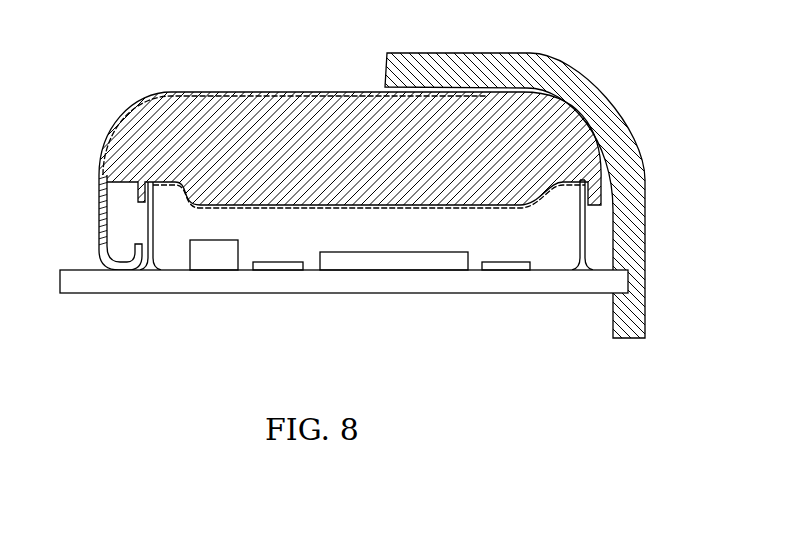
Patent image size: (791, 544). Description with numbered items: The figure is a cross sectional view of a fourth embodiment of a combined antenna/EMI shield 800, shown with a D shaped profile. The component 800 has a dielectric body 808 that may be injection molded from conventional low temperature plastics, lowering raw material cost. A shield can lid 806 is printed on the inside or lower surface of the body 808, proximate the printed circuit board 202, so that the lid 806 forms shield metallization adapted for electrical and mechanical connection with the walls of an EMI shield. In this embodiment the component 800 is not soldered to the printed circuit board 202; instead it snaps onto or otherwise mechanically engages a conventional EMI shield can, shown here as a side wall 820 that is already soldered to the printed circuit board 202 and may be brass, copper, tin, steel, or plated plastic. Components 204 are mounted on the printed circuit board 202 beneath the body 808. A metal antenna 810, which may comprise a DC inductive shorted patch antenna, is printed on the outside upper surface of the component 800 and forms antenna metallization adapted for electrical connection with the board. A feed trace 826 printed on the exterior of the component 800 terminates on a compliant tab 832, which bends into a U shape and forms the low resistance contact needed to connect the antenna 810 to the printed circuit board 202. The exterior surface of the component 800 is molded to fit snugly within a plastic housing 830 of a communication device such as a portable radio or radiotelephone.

The combined antenna/EMI shield 800 is at (116, 111).
The body 808 is at (523, 122).
The antenna 810 is at (247, 92).
The shield can lid 806 is at (472, 208).
The feed trace 826 is at (98, 205).
The compliant tab 832 is at (122, 250).
The plastic housing 830 is at (612, 98).
The side wall 820 is at (585, 233).
The printed circuit board 202 is at (235, 295).
The electronic components 204 is at (415, 253).